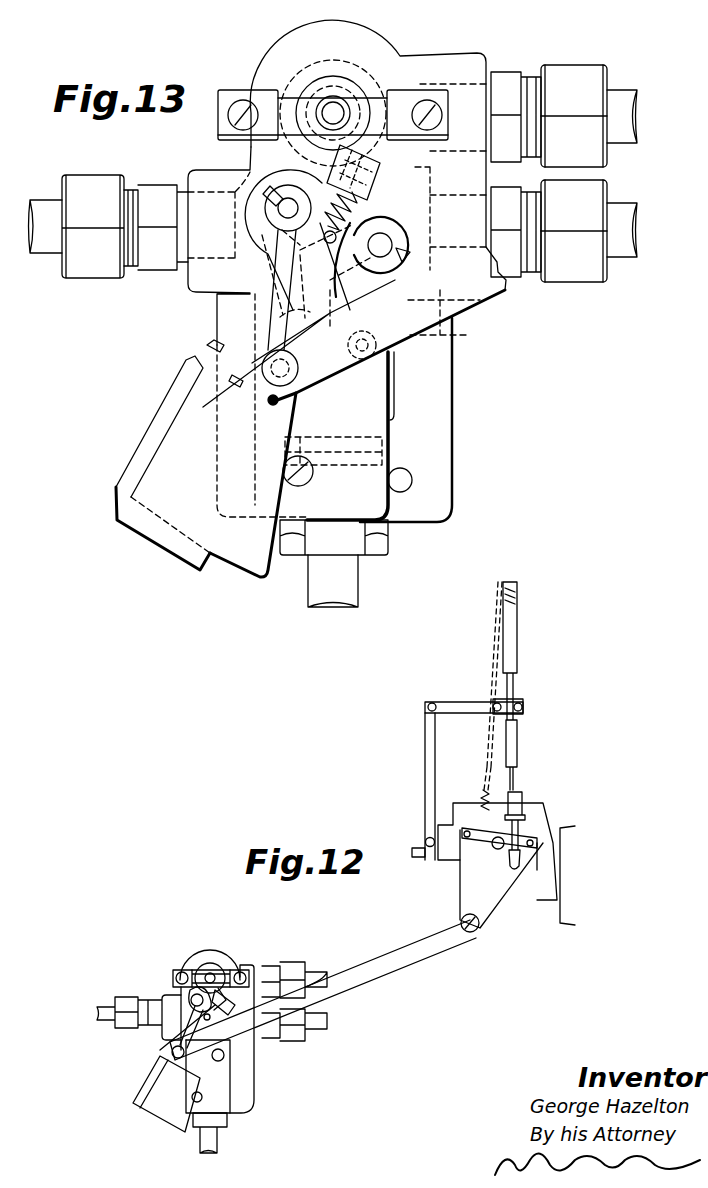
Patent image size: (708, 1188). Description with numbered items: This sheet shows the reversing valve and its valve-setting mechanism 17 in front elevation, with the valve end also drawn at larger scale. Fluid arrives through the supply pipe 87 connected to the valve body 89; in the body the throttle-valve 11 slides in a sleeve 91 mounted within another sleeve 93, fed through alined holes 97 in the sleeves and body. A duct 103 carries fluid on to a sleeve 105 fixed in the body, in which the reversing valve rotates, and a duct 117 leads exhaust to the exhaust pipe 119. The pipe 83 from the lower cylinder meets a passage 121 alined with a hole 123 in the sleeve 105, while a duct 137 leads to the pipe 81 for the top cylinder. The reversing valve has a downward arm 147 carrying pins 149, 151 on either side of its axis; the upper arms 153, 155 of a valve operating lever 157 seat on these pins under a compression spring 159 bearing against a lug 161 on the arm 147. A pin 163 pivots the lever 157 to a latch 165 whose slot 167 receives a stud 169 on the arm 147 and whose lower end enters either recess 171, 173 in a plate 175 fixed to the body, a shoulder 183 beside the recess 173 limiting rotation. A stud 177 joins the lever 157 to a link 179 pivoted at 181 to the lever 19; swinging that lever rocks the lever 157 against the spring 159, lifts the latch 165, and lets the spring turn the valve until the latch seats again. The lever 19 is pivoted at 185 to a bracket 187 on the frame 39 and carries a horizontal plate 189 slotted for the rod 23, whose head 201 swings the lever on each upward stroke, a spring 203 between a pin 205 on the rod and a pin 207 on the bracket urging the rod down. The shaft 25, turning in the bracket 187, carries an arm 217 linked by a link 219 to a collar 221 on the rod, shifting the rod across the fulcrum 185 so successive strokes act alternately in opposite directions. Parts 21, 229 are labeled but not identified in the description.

In FIG. 13, the throttle-valve 11 is at (323, 115).
In FIG. 12, the throttle-valve 11 is at (211, 970).
In FIG. 13, the valve-setting mechanism 17 is at (438, 363).
In FIG. 12, the valve-setting mechanism 17 is at (276, 1100).
In FIG. 12, the lever 19 is at (497, 900).
In FIG. 12, the rod 21 is at (540, 650).
In FIG. 12, the rod 23 is at (520, 830).
In FIG. 12, the shaft 25 is at (425, 838).
In FIG. 12, the frame 39 is at (562, 918).
In FIG. 13, the pipe 81 is at (45, 200).
In FIG. 12, the pipe 81 is at (103, 1005).
In FIG. 13, the pipe 83 is at (322, 595).
In FIG. 12, the pipe 83 is at (218, 1145).
In FIG. 13, the supply pipe 87 is at (630, 95).
In FIG. 12, the supply pipe 87 is at (318, 970).
In FIG. 13, the valve body 89 is at (466, 60).
In FIG. 12, the valve body 89 is at (248, 1072).
In FIG. 13, the sleeve 91 is at (330, 75).
In FIG. 12, the sleeve 91 is at (208, 960).
In FIG. 13, the sleeve 93 is at (305, 70).
In FIG. 12, the sleeve 93 is at (220, 960).
In FIG. 13, the alined holes 97 is at (365, 86).
In FIG. 13, the duct 103 is at (278, 140).
In FIG. 12, the duct 103 is at (211, 978).
In FIG. 13, the sleeve 105 is at (408, 262).
In FIG. 13, the duct 117 is at (410, 185).
In FIG. 13, the exhaust pipe 119 is at (620, 222).
In FIG. 12, the exhaust pipe 119 is at (330, 1021).
In FIG. 13, the passage 121 is at (385, 300).
In FIG. 13, the hole 123 is at (262, 294).
In FIG. 13, the duct 137 is at (200, 172).
In FIG. 13, the arm 147 is at (270, 250).
In FIG. 12, the arm 147 is at (207, 995).
In FIG. 13, the pin 149 is at (392, 246).
In FIG. 13, the pin 151 is at (278, 203).
In FIG. 12, the pin 151 is at (190, 1005).
In FIG. 13, the upper arm 153 is at (402, 220).
In FIG. 13, the upper arm 155 is at (280, 193).
In FIG. 12, the upper arm 155 is at (191, 997).
In FIG. 13, the valve operating lever 157 is at (280, 300).
In FIG. 12, the valve operating lever 157 is at (235, 1038).
In FIG. 13, the compression spring 159 is at (380, 185).
In FIG. 12, the compression spring 159 is at (240, 1028).
In FIG. 13, the lug 161 is at (352, 168).
In FIG. 12, the lug 161 is at (232, 960).
In FIG. 13, the pin 163 is at (328, 245).
In FIG. 12, the pin 163 is at (205, 1020).
In FIG. 13, the latch 165 is at (370, 330).
In FIG. 13, the elongated slot 167 is at (282, 328).
In FIG. 13, the stud 169 is at (305, 348).
In FIG. 13, the recess 171 is at (268, 420).
In FIG. 12, the recess 171 is at (180, 1062).
In FIG. 13, the recess 173 is at (220, 375).
In FIG. 12, the recess 173 is at (165, 1068).
In FIG. 13, the plate 175 is at (182, 403).
In FIG. 12, the plate 175 is at (150, 1112).
In FIG. 13, the stud 177 is at (230, 395).
In FIG. 12, the stud 177 is at (165, 1048).
In FIG. 13, the link 179 is at (468, 308).
In FIG. 12, the link 179 is at (420, 955).
In FIG. 12, the pivot 181 is at (470, 932).
In FIG. 13, the shoulder 183 is at (204, 345).
In FIG. 12, the fulcrum 185 is at (485, 845).
In FIG. 12, the bracket 187 is at (538, 810).
In FIG. 12, the horizontal plate 189 is at (492, 846).
In FIG. 12, the head 201 is at (530, 865).
In FIG. 12, the spring 203 is at (495, 665).
In FIG. 12, the pin 205 is at (512, 594).
In FIG. 12, the pin 207 is at (482, 800).
In FIG. 12, the arm 217 is at (425, 748).
In FIG. 12, the link 219 is at (455, 700).
In FIG. 12, the collar 221 is at (523, 703).
In FIG. 13, the ring 229 is at (350, 95).
In FIG. 12, the ring 229 is at (195, 977).